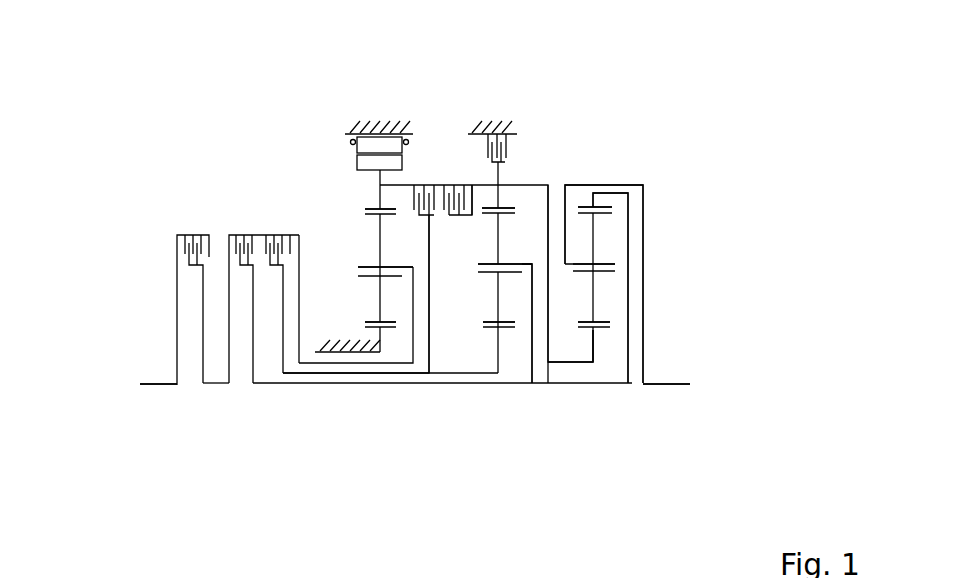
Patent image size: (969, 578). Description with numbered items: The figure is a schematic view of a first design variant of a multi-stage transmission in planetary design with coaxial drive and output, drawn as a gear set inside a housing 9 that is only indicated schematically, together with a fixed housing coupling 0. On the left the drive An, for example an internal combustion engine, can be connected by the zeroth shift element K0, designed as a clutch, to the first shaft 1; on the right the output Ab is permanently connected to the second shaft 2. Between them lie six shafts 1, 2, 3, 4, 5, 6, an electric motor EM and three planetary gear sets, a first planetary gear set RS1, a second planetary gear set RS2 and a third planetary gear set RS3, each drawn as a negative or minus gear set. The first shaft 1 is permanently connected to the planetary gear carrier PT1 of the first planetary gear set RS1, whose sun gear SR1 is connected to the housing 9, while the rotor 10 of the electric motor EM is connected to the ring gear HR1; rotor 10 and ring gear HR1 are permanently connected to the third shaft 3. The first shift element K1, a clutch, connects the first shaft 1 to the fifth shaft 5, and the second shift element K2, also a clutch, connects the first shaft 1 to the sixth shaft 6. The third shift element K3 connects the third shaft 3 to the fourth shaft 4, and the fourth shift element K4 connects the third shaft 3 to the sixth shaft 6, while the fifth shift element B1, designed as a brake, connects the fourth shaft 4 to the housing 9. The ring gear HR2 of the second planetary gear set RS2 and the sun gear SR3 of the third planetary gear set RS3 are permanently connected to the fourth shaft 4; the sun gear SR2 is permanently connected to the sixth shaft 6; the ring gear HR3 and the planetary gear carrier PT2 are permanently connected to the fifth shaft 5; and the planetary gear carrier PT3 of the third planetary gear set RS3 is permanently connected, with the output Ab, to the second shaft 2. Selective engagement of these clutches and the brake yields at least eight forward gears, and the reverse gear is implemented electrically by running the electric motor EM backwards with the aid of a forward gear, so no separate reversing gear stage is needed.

The zeroth shift element K0 is at (192, 231).
The first shift element K1 is at (242, 228).
The second shift element K2 is at (277, 228).
The third shift element K3 is at (452, 182).
The fourth shift element K4 is at (420, 182).
The fifth shift element B1 is at (514, 146).
The electric motor EM is at (344, 137).
The rotor 10 is at (356, 160).
The ring gear of the first planetary gear set HR1 is at (366, 211).
The ring gear of the second planetary gear set HR2 is at (518, 258).
The ring gear of the third planetary gear set HR3 is at (623, 190).
The planetary gear carrier of the first planetary gear set PT1 is at (361, 263).
The planetary gear carrier of the second planetary gear set PT2 is at (509, 207).
The planetary gear carrier of the third planetary gear set PT3 is at (612, 256).
The sun gear of the first planetary gear set SR1 is at (387, 331).
The sun gear of the second planetary gear set SR2 is at (509, 333).
The sun gear of the third planetary gear set SR3 is at (607, 329).
The first planetary gear set RS1 is at (380, 414).
The second planetary gear set RS2 is at (498, 414).
The third planetary gear set RS3 is at (595, 414).
The fixed housing coupling 0 is at (366, 353).
The first shaft 1 is at (408, 273).
The second shaft 2 is at (574, 270).
The third shaft 3 is at (374, 202).
The fourth shaft 4 is at (471, 183).
The fifth shaft 5 is at (606, 206).
The sixth shaft 6 is at (489, 333).
The housing 9 is at (372, 128).
The drive An is at (158, 372).
The output Ab is at (666, 372).